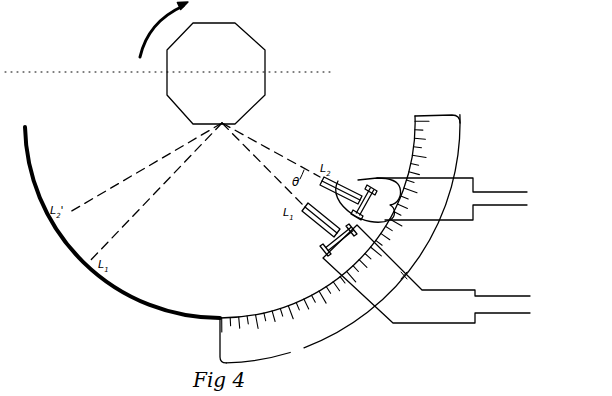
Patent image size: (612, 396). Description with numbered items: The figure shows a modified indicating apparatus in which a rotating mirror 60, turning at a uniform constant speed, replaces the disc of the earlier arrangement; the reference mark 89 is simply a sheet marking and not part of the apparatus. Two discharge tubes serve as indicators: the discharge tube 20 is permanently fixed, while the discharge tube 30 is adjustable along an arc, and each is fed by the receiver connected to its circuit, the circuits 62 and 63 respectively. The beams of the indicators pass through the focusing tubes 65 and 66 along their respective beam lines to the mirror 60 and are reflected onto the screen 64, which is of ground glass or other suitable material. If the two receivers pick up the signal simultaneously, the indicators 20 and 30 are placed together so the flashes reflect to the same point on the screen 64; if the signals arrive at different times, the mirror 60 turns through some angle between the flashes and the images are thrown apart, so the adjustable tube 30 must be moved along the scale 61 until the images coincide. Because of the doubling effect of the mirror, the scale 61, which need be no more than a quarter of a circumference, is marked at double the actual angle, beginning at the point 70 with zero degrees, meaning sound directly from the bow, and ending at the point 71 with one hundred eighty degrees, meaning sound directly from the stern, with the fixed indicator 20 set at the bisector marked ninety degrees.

The octagonal rotating body 60 is at (260, 44).
The screen 64 is at (93, 272).
The scale 61 is at (448, 150).
The point marked 180 degrees 71 is at (218, 328).
The point marked 0 degrees 70 is at (428, 111).
The circuit 63 is at (431, 200).
The circuit 62 is at (426, 274).
The focusing tube 66 is at (340, 180).
The focusing tube 65 is at (305, 217).
The discharge tube 30 is at (369, 185).
The discharge tube 20 is at (330, 246).
The sheet mark 89 is at (574, 387).